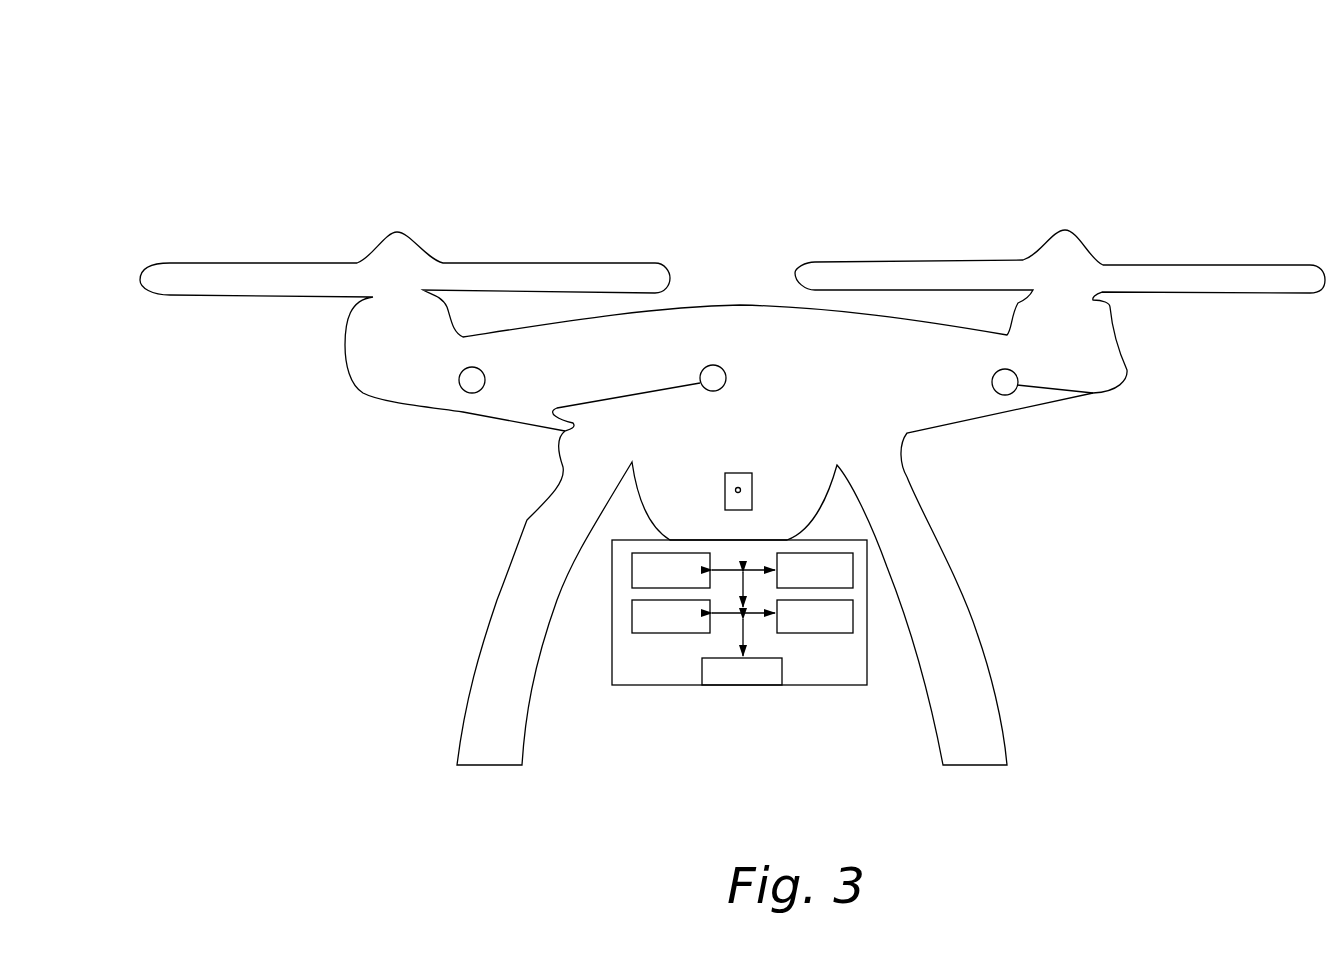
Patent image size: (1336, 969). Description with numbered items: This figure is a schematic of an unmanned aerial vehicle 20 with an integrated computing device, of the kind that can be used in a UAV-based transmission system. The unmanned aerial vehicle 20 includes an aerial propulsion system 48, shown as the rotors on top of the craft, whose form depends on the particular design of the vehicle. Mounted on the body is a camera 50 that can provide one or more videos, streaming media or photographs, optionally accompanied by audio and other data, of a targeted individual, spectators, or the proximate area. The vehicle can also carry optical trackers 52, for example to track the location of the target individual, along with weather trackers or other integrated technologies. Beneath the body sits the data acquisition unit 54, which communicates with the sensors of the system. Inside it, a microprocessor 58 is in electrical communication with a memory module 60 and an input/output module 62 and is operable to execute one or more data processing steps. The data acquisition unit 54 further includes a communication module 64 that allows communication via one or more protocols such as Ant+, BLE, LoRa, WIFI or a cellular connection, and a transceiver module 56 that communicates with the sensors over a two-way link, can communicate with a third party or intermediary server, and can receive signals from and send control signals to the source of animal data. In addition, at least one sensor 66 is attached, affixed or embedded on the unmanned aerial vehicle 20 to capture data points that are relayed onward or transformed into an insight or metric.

The unmanned aerial vehicle 20 is at (1088, 142).
The aerial propulsion system 48 is at (893, 247).
The camera 50 is at (752, 484).
The optical trackers 52 is at (461, 386).
The data acquisition unit 54 is at (598, 597).
The transceiver module 56 is at (750, 663).
The microprocessor 58 is at (652, 632).
The memory module 60 is at (852, 565).
The input/output module 62 is at (833, 633).
The communication module 64 is at (633, 563).
The sensor 66 is at (550, 432).